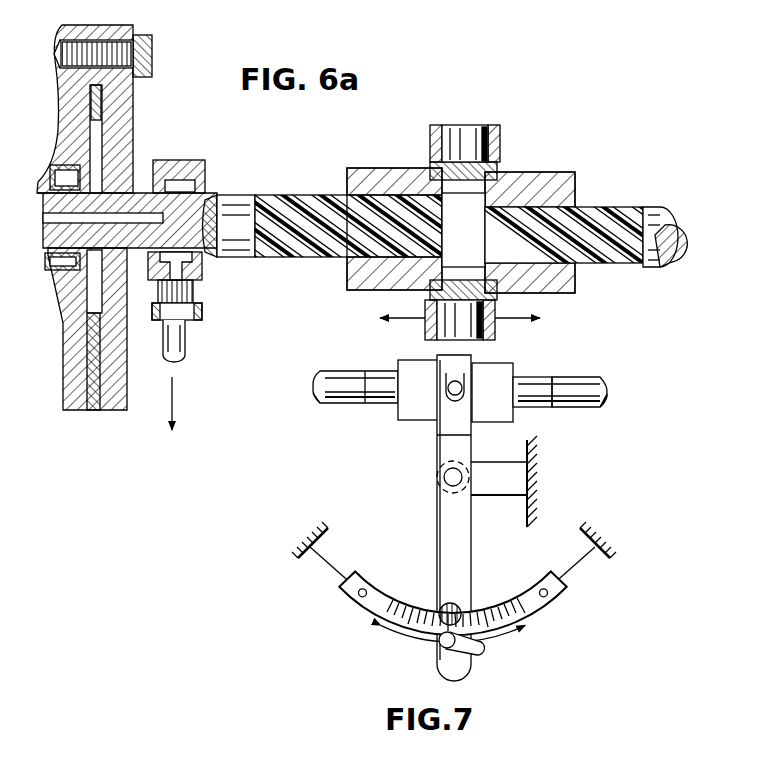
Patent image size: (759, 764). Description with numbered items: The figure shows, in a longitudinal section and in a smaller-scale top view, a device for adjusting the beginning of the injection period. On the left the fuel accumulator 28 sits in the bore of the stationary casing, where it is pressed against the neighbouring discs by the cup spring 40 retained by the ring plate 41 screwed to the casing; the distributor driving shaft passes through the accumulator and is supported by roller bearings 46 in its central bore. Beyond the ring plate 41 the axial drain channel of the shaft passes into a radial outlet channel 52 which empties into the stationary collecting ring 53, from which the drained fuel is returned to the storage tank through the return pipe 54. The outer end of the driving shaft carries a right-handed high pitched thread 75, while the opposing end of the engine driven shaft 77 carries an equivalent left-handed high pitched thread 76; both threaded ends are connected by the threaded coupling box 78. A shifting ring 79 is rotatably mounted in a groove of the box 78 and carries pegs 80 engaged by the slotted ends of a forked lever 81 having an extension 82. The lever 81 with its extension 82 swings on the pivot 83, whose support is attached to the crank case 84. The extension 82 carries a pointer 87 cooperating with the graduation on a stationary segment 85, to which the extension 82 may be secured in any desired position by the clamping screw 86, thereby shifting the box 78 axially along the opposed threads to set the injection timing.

In FIG. 6A, the fuel accumulator 28 is at (73, 143).
In FIG. 6A, the roller bearings 46 is at (78, 177).
In FIG. 6A, the stationary collecting ring 53 is at (176, 158).
In FIG. 6A, the radial outlet channel 52 is at (202, 262).
In FIG. 6A, the return pipe 54 is at (182, 343).
In FIG. 6A, the cup spring 40 is at (95, 410).
In FIG. 6A, the ring plate 41 is at (120, 410).
In FIG. 6A, the right-handed high pitched thread 75 is at (300, 193).
In FIG. 7, the right-handed high pitched thread 75 is at (372, 402).
In FIG. 6A, the left-handed high pitched thread 76 is at (580, 207).
In FIG. 7, the left-handed high pitched thread 76 is at (530, 387).
In FIG. 6A, the engine driven shaft 77 is at (657, 212).
In FIG. 7, the engine driven shaft 77 is at (606, 384).
In FIG. 6A, the threaded coupling box 78 is at (370, 177).
In FIG. 7, the threaded coupling box 78 is at (420, 405).
In FIG. 6A, the shifting ring 79 is at (500, 167).
In FIG. 6A, the pegs 80 is at (465, 125).
In FIG. 7, the pegs 80 is at (465, 385).
In FIG. 6A, the pivot 83 is at (432, 127).
In FIG. 7, the pivot 83 is at (444, 471).
In FIG. 7, the forked lever 81 is at (447, 445).
In FIG. 7, the lever extension 82 is at (453, 560).
In FIG. 7, the crank case 84 is at (529, 472).
In FIG. 7, the stationary segment 85 is at (377, 607).
In FIG. 7, the clamping screw 86 is at (478, 648).
In FIG. 7, the pointer 87 is at (445, 608).